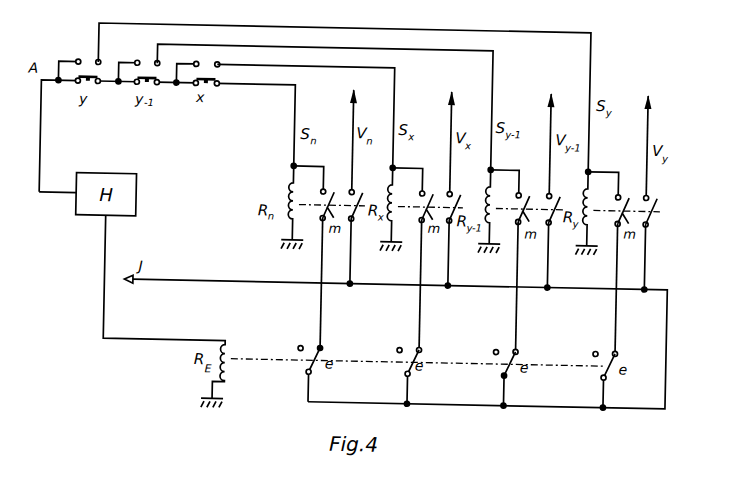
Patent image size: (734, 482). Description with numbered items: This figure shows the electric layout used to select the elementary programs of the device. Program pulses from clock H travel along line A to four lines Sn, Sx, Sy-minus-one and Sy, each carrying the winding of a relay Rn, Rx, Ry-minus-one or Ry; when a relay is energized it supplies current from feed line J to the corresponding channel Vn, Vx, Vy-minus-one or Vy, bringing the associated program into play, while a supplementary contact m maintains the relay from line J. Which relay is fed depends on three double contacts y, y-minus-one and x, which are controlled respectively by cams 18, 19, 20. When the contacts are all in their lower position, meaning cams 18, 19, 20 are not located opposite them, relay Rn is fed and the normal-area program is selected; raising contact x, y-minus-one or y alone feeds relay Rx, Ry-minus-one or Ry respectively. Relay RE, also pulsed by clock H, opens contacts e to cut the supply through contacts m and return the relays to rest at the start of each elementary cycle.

The cam 18 is at (77, 82).
The cam 19 is at (134, 83).
The cam 20 is at (196, 83).